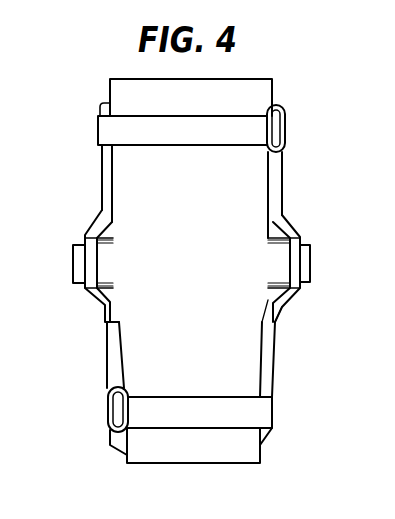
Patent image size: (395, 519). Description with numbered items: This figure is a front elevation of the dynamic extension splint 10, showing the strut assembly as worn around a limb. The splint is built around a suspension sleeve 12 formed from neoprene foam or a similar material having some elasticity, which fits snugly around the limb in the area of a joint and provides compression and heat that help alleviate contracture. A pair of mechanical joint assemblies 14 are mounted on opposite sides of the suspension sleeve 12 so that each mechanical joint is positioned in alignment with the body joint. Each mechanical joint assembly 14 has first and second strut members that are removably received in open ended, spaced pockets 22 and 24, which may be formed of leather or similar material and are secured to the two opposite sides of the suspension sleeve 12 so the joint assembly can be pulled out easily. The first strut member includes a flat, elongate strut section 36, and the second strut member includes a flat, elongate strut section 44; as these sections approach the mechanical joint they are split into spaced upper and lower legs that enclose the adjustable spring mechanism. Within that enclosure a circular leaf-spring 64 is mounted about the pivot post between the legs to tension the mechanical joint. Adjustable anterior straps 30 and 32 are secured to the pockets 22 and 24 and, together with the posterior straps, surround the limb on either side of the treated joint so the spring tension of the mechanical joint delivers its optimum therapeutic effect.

The dynamic extension splint 10 is at (270, 452).
The suspension sleeve 12 is at (118, 97).
The mechanical joint assembly 14 is at (74, 268).
The pocket 22 is at (100, 167).
The pocket 24 is at (108, 367).
The anterior strap 30 is at (141, 140).
The anterior strap 32 is at (148, 415).
The strut section 36 is at (282, 216).
The strut section 44 is at (275, 316).
The circular leaf-spring 64 is at (105, 258).